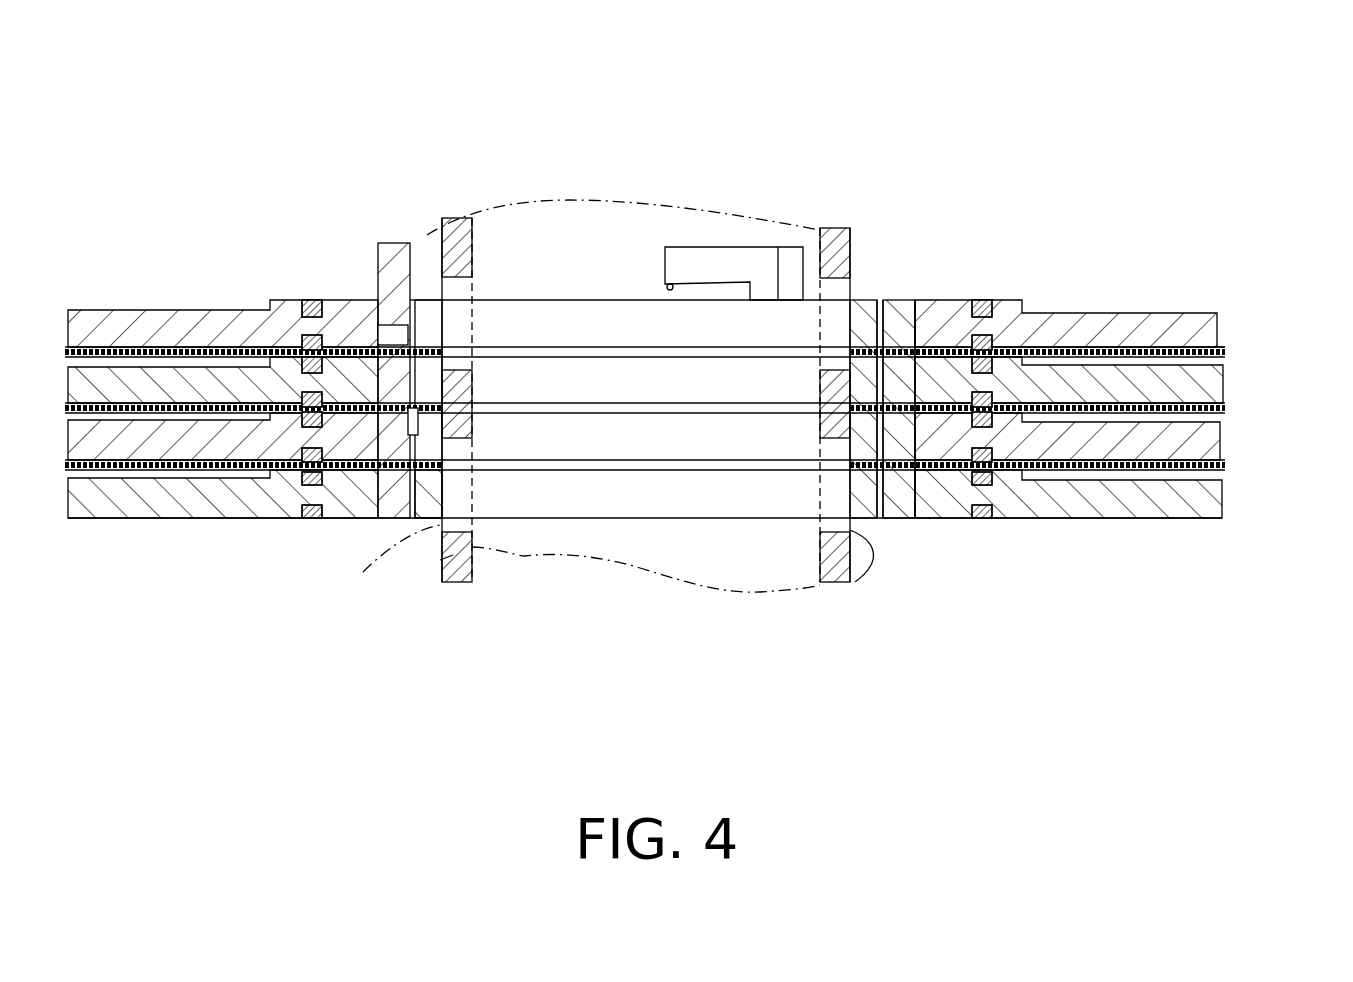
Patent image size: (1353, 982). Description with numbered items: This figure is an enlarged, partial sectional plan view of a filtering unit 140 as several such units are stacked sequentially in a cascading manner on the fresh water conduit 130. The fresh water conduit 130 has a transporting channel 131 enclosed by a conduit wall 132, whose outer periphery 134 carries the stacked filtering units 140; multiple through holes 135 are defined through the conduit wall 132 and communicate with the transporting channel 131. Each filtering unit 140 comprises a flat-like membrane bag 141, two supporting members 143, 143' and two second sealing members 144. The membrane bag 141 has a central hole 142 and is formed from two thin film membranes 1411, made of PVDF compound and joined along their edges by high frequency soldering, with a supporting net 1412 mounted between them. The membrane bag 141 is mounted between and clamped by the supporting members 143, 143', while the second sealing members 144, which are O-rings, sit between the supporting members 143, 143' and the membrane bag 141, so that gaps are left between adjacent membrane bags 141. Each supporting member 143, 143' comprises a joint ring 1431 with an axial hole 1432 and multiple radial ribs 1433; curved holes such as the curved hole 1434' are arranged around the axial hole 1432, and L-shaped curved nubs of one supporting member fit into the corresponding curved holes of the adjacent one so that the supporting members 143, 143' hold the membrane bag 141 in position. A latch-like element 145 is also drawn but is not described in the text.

The fresh water conduit 130 is at (478, 572).
The transporting channel 131 is at (517, 560).
The conduit wall 132 is at (442, 558).
The outer periphery 134 is at (863, 580).
The through holes 135 is at (393, 372).
The filtering unit 140 is at (263, 262).
The membrane bag 141 is at (1110, 317).
The central hole 142 is at (905, 317).
The supporting member 143 is at (1066, 212).
The supporting member 143' is at (1068, 520).
The second sealing member 144 is at (983, 317).
The latch 145 is at (700, 263).
The thin film membrane 1411 is at (1222, 348).
The supporting net 1412 is at (1225, 356).
The joint ring 1431 is at (343, 318).
The axial hole 1432 is at (858, 315).
The radial ribs 1433 is at (1160, 318).
The curved hole 1434' is at (431, 323).